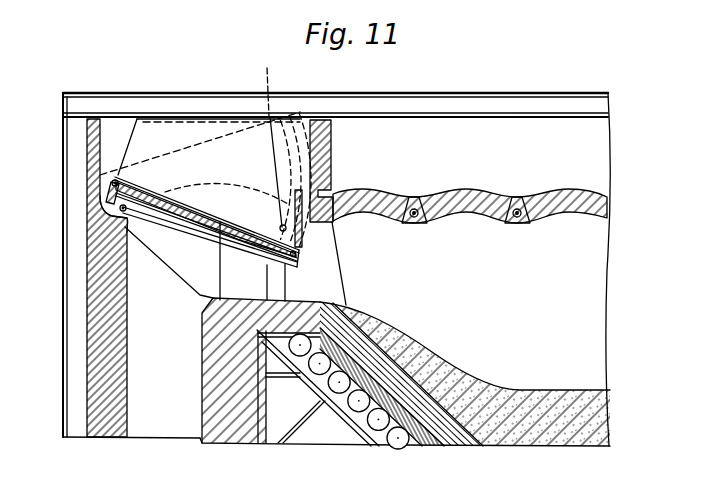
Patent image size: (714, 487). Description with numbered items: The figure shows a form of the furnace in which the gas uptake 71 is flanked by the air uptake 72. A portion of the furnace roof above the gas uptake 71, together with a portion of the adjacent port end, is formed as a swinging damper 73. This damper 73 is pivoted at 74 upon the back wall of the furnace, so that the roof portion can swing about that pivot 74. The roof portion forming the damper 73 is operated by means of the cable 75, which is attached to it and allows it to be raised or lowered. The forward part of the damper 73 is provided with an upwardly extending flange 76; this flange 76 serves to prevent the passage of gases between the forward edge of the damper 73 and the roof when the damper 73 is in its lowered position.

The gas uptake 71 is at (137, 362).
The air uptake 72 is at (210, 268).
The swinging damper 73 is at (195, 219).
The pivot 74 is at (93, 203).
The cable 75 is at (268, 83).
The upwardly extending flange 76 is at (331, 192).